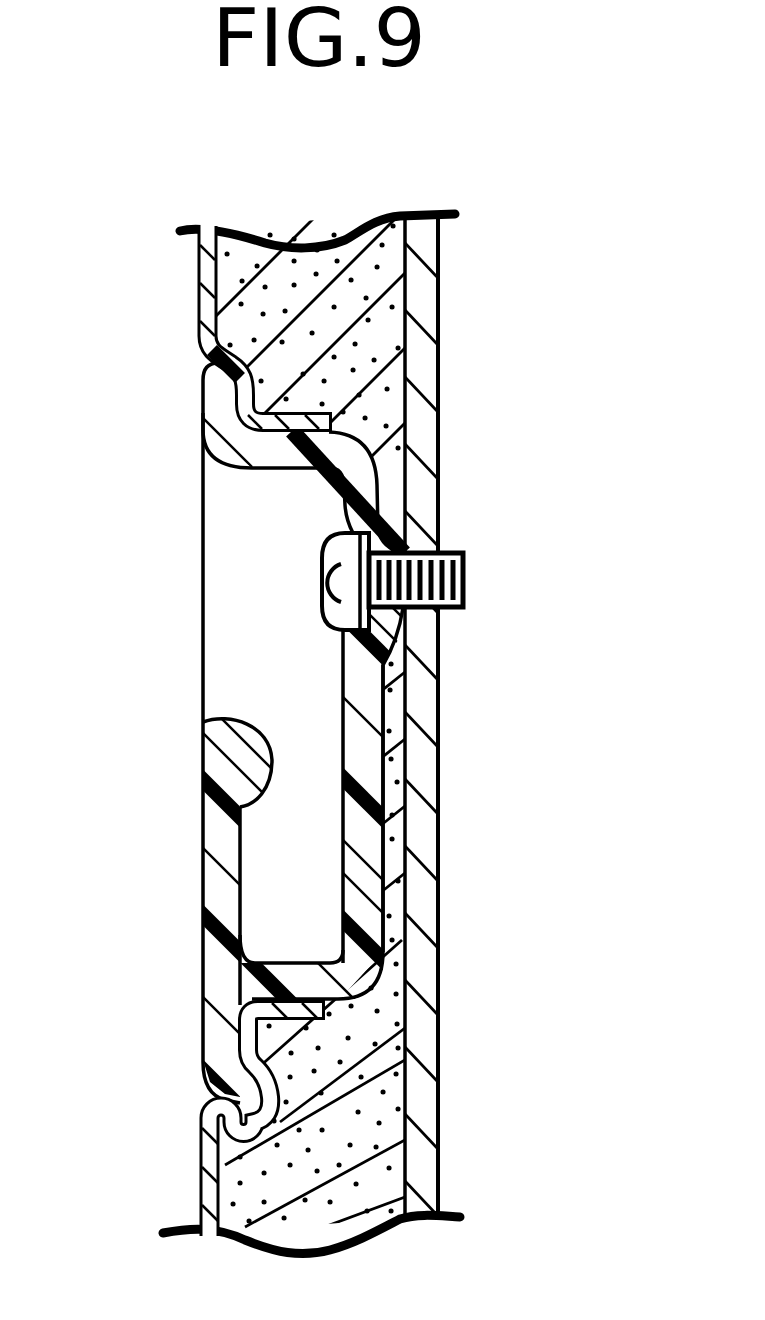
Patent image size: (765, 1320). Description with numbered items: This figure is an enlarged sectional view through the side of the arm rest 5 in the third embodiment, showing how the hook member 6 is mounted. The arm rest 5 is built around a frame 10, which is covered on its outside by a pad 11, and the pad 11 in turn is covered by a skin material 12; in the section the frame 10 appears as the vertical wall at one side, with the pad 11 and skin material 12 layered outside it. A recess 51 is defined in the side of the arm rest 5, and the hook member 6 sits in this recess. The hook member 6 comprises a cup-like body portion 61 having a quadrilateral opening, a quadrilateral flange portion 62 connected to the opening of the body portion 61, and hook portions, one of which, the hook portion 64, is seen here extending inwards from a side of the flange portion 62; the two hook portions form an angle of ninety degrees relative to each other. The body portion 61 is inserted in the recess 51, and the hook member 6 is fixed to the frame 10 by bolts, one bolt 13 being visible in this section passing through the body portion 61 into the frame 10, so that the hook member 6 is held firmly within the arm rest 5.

The arm rest 5 is at (185, 415).
The hook member 6 is at (246, 840).
The frame 10 is at (422, 362).
The pad 11 is at (238, 268).
The skin material 12 is at (208, 1157).
The bolt 13 is at (332, 616).
The recess 51 is at (272, 434).
The body portion 61 is at (352, 822).
The flange portion 62 is at (213, 413).
The hook portion 64 is at (218, 811).